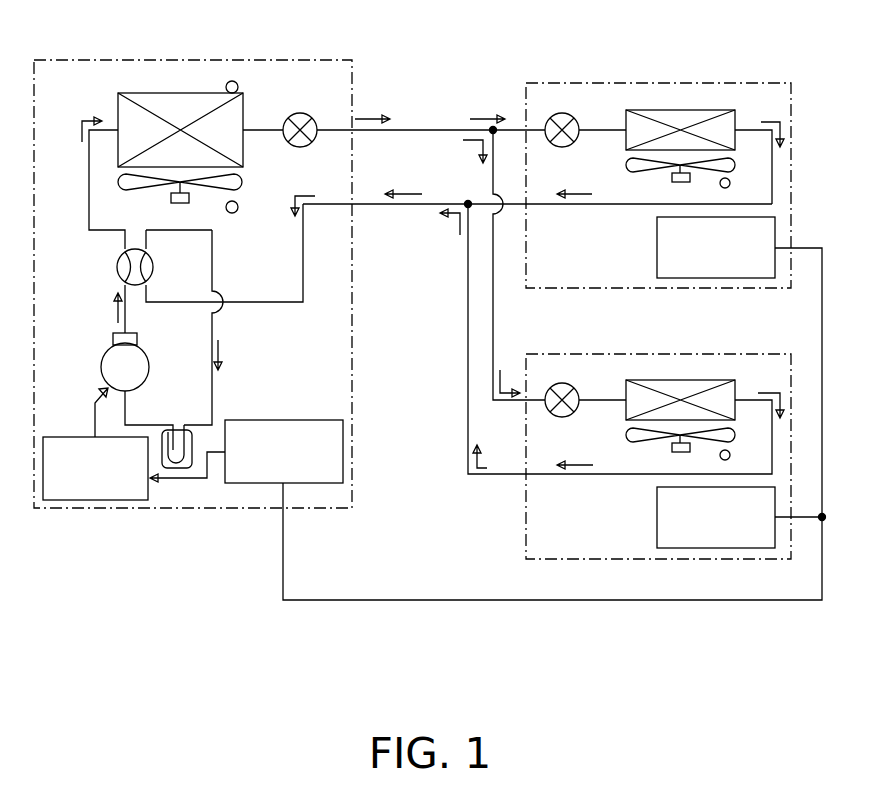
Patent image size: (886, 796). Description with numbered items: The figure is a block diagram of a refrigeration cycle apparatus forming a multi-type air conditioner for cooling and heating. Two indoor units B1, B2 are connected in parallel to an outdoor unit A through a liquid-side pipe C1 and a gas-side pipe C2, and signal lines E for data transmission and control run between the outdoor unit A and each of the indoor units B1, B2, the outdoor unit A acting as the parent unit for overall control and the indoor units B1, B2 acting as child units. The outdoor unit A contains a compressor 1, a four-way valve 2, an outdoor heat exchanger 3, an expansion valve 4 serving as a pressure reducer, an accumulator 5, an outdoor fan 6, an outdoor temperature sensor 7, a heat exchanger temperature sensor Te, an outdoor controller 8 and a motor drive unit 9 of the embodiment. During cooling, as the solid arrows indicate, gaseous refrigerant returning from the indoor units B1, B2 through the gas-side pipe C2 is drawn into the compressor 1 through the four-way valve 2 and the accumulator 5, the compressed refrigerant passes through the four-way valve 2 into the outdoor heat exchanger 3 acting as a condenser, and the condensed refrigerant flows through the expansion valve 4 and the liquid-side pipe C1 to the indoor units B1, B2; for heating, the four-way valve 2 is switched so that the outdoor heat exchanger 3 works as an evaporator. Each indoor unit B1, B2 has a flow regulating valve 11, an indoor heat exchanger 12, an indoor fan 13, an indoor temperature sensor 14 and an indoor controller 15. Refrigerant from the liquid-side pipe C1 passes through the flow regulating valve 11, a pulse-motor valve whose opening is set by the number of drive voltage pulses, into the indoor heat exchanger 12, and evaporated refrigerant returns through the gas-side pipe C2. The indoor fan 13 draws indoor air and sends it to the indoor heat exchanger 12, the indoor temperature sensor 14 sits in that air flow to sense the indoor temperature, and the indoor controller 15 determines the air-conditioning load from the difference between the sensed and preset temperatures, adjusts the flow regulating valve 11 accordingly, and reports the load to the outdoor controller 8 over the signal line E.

The compressor 1 is at (104, 358).
The four-way valve 2 is at (117, 268).
The outdoor heat exchanger 3 is at (118, 105).
The expansion valve 4 is at (306, 116).
The accumulator 5 is at (183, 468).
The outdoor fan 6 is at (243, 182).
The outdoor temperature sensor 7 is at (236, 212).
The outdoor controller 8 is at (283, 420).
The motor drive unit 9 is at (63, 437).
The heat exchanger temperature sensor Te is at (238, 85).
The outdoor unit A is at (353, 78).
The indoor unit B1 is at (683, 84).
The indoor unit B2 is at (683, 355).
The liquid-side pipe C1 is at (446, 127).
The gas-side pipe C2 is at (437, 202).
The signal line E is at (478, 600).
The flow regulating valve 11 is at (574, 117).
The indoor heat exchanger 12 is at (713, 110).
The indoor fan 13 is at (626, 165).
The indoor temperature sensor 14 is at (729, 187).
The indoor controller 15 is at (657, 246).